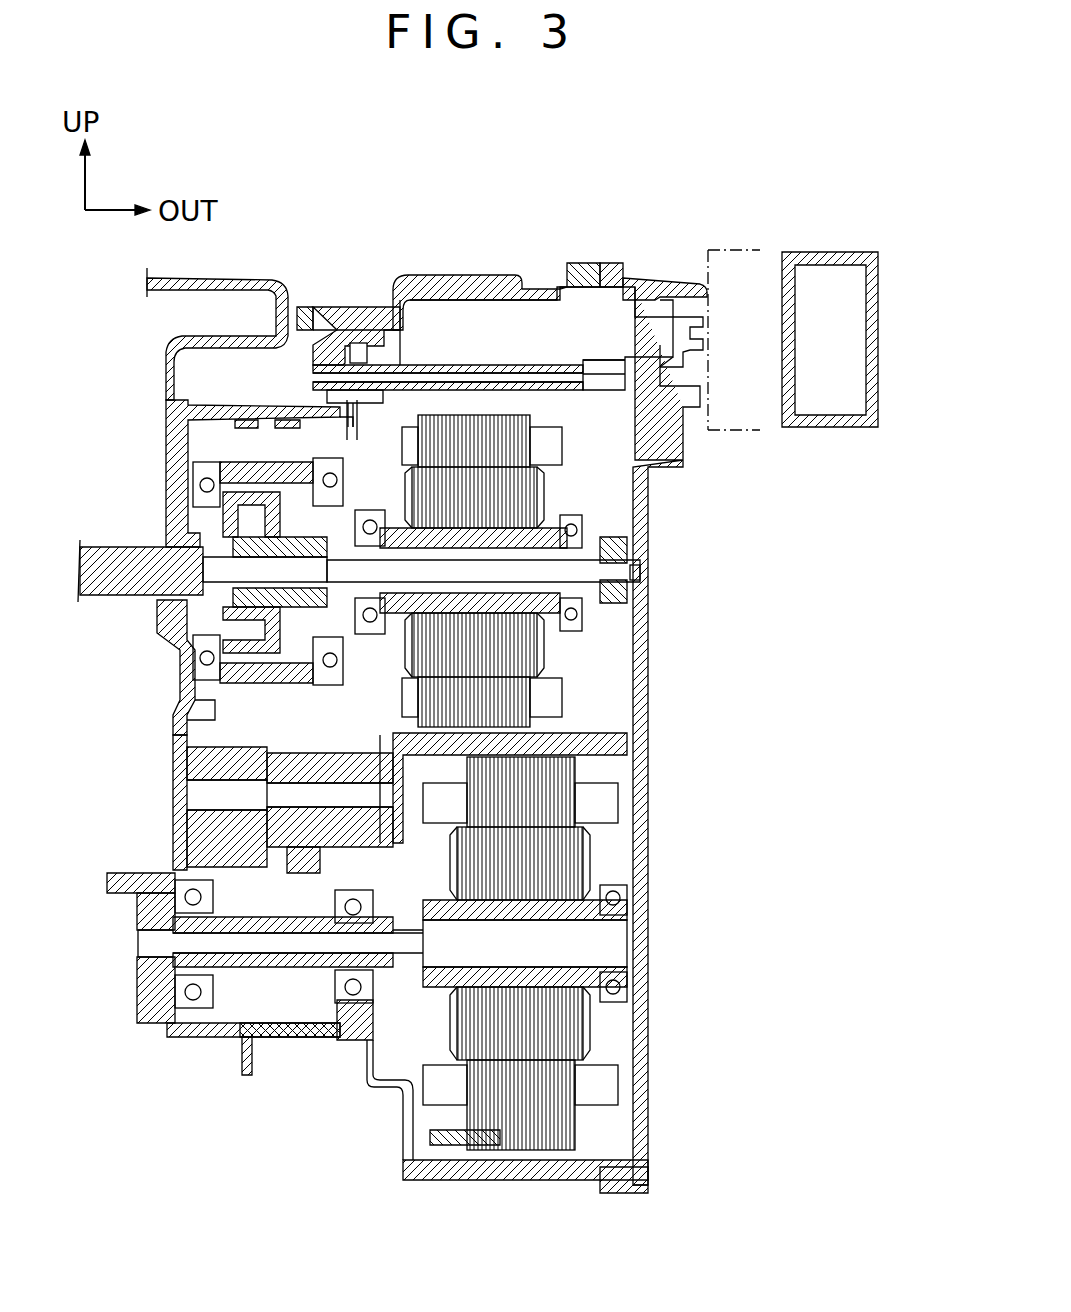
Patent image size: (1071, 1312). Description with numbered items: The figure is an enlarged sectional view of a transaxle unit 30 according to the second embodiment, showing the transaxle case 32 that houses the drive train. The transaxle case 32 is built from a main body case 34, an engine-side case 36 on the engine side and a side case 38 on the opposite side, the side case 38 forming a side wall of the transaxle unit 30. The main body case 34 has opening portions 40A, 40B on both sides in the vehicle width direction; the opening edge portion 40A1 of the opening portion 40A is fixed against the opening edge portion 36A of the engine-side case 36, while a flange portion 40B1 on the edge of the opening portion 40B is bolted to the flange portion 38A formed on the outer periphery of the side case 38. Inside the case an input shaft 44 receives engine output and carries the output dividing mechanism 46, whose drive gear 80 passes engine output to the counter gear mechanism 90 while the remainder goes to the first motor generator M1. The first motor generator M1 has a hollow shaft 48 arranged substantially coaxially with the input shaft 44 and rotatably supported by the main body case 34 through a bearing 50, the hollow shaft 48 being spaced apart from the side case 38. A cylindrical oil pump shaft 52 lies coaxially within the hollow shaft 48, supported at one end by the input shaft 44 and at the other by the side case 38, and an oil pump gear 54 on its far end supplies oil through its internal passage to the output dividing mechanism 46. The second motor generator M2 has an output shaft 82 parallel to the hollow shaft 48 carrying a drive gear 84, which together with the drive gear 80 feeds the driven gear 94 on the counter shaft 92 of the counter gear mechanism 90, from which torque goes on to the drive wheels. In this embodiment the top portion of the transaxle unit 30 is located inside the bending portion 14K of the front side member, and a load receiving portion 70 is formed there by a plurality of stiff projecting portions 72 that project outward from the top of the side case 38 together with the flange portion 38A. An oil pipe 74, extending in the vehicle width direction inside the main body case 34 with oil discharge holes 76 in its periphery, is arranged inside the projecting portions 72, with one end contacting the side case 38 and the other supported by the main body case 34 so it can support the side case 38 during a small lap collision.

The transaxle unit 30 is at (586, 168).
The transaxle case 32 is at (518, 226).
The main body case 34 is at (462, 276).
The engine-side case 36 is at (232, 283).
The opening edge portion 36A is at (300, 306).
The opening portion 40A is at (330, 334).
The opening edge portion 40A1 is at (320, 306).
The opening portion 40B is at (493, 338).
The flange portion 40B1 is at (590, 273).
The flange portion 38A is at (613, 273).
The side case 38 is at (650, 586).
The projecting portions 72 is at (688, 284).
The bending portion 14K is at (750, 250).
The load receiving portion 70 is at (714, 390).
The oil pipe 74 is at (497, 366).
The oil discharge holes 76 is at (478, 382).
The first motor generator M1 is at (566, 445).
The second motor generator M2 is at (594, 1045).
The output dividing mechanism 46 is at (201, 463).
The input shaft 44 is at (117, 547).
The bearing 50 is at (568, 515).
The oil pump gear 54 is at (607, 536).
The oil pump shaft 52 is at (583, 573).
The hollow shaft 48 is at (553, 613).
The driven gear 94 is at (195, 698).
The counter gear mechanism 90 is at (187, 762).
The counter shaft 92 is at (190, 815).
The drive gear 80 is at (330, 692).
The output shaft 82 is at (232, 1013).
The drive gear 84 is at (252, 1015).